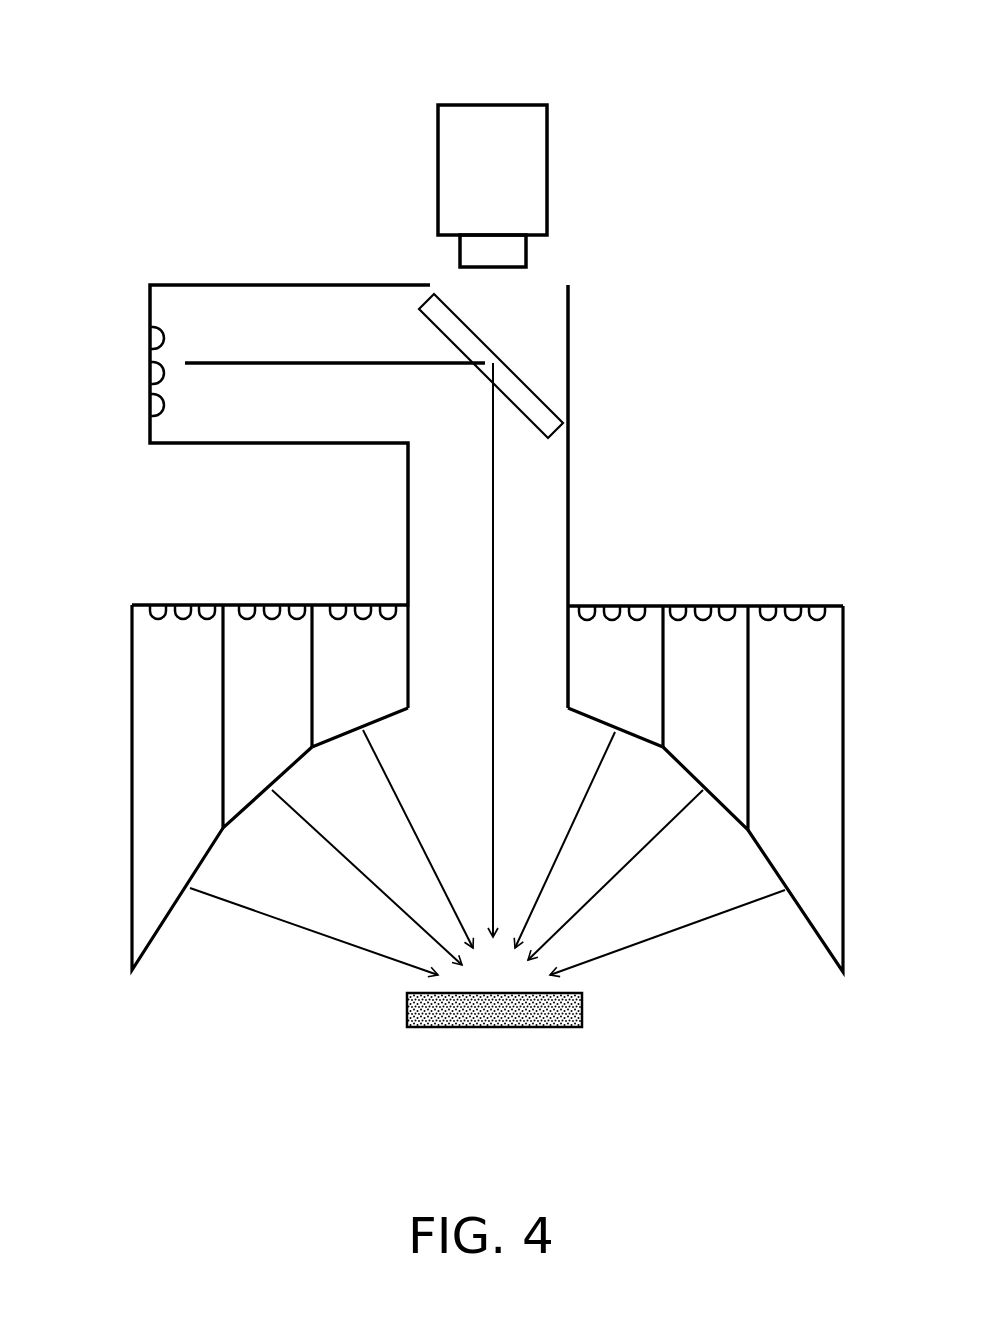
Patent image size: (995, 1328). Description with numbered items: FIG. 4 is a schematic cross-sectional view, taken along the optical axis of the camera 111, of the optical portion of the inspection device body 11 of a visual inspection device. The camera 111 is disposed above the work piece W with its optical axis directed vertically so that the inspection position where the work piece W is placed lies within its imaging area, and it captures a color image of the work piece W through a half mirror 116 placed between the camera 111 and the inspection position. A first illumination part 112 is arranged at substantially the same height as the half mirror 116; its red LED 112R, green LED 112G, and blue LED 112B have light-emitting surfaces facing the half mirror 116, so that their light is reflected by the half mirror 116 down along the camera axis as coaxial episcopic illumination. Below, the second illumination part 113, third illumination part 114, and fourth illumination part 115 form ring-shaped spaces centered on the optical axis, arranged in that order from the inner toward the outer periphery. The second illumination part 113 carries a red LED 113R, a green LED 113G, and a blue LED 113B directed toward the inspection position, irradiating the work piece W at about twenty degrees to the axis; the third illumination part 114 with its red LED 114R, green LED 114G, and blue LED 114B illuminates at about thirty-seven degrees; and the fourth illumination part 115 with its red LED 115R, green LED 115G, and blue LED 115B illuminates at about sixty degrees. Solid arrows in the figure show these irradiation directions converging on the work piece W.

The inspection device body 11 is at (372, 102).
The camera 111 is at (548, 168).
The first illumination part 112 is at (308, 312).
The red LED 112R is at (150, 338).
The green LED 112G is at (150, 373).
The blue LED 112B is at (150, 405).
The second illumination part 113 is at (383, 687).
The red LED 113R is at (338, 605).
The green LED 113G is at (363, 605).
The blue LED 113B is at (388, 605).
The third illumination part 114 is at (292, 697).
The red LED 114R is at (678, 606).
The green LED 114G is at (703, 606).
The blue LED 114B is at (727, 606).
The fourth illumination part 115 is at (195, 731).
The red LED 115R is at (134, 615).
The green LED 115G is at (180, 605).
The blue LED 115B is at (207, 605).
The half mirror 116 is at (525, 383).
The work piece W is at (440, 1028).